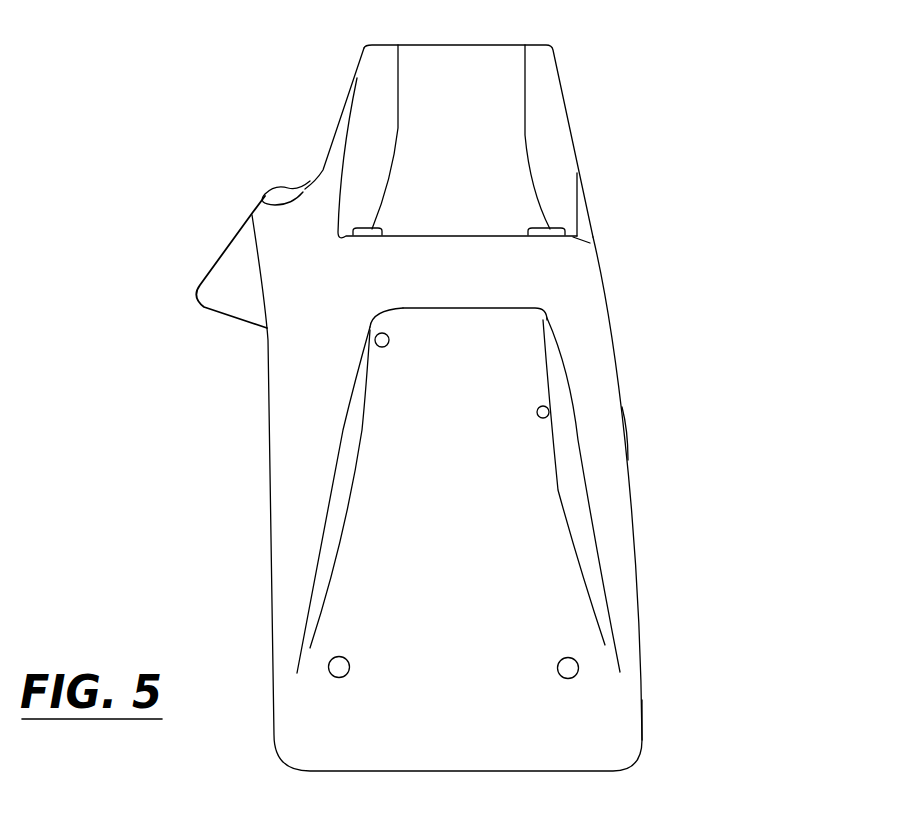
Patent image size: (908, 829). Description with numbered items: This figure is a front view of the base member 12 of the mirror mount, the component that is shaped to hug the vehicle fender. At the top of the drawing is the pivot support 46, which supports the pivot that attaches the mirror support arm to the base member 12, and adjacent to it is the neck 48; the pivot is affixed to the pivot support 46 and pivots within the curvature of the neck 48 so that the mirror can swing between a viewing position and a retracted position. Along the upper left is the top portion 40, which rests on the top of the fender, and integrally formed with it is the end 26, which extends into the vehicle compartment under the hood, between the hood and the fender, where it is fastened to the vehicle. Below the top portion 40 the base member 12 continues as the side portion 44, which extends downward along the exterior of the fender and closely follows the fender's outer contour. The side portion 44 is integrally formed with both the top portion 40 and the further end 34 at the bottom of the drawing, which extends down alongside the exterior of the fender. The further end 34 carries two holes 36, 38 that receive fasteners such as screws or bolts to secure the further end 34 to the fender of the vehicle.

The base member 12 is at (695, 150).
The end 26 is at (222, 300).
The further end 34 is at (587, 743).
The hole 36 is at (330, 676).
The hole 38 is at (579, 663).
The top portion 40 is at (292, 190).
The side portion 44 is at (520, 552).
The pivot support 46 is at (552, 283).
The neck 48 is at (512, 157).